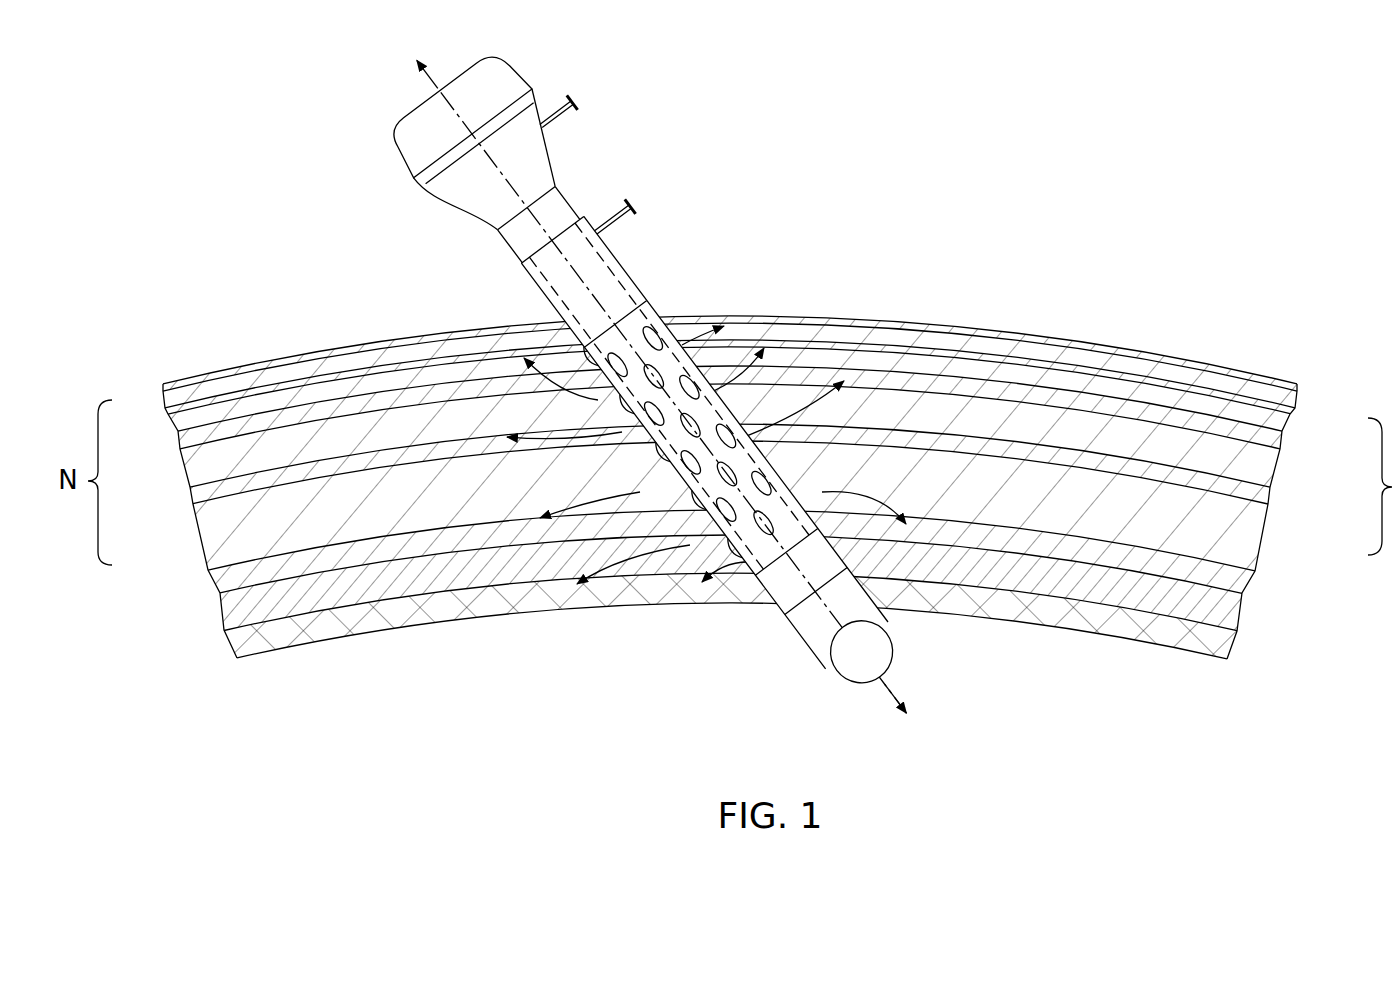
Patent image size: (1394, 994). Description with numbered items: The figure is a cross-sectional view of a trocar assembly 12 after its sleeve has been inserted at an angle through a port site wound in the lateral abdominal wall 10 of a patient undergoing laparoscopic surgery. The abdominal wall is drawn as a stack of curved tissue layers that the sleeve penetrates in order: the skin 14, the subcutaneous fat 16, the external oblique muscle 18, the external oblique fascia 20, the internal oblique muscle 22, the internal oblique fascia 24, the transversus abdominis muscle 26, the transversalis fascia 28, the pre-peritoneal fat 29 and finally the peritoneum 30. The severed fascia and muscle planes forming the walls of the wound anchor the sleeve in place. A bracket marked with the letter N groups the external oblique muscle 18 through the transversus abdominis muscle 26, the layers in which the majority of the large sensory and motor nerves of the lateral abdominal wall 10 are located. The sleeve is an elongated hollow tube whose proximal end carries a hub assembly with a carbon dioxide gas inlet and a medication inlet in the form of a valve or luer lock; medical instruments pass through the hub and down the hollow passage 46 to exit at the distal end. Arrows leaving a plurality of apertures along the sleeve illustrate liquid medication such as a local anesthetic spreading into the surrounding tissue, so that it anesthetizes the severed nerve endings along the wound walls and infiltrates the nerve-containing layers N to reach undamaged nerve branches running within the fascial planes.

The lateral abdominal wall 10 is at (992, 282).
The trocar assembly 12 is at (728, 118).
The skin 14 is at (216, 364).
The subcutaneous fat 16 is at (160, 388).
The external oblique muscle 18 is at (163, 412).
The external oblique fascia 20 is at (176, 433).
The internal oblique muscle 22 is at (183, 468).
The internal oblique fascia 24 is at (192, 505).
The transversus abdominis muscle 26 is at (197, 545).
The transversalis fascia 28 is at (210, 592).
The pre-peritoneal fat 29 is at (222, 632).
The peritoneum 30 is at (250, 662).
The hollow passage 46 is at (876, 660).